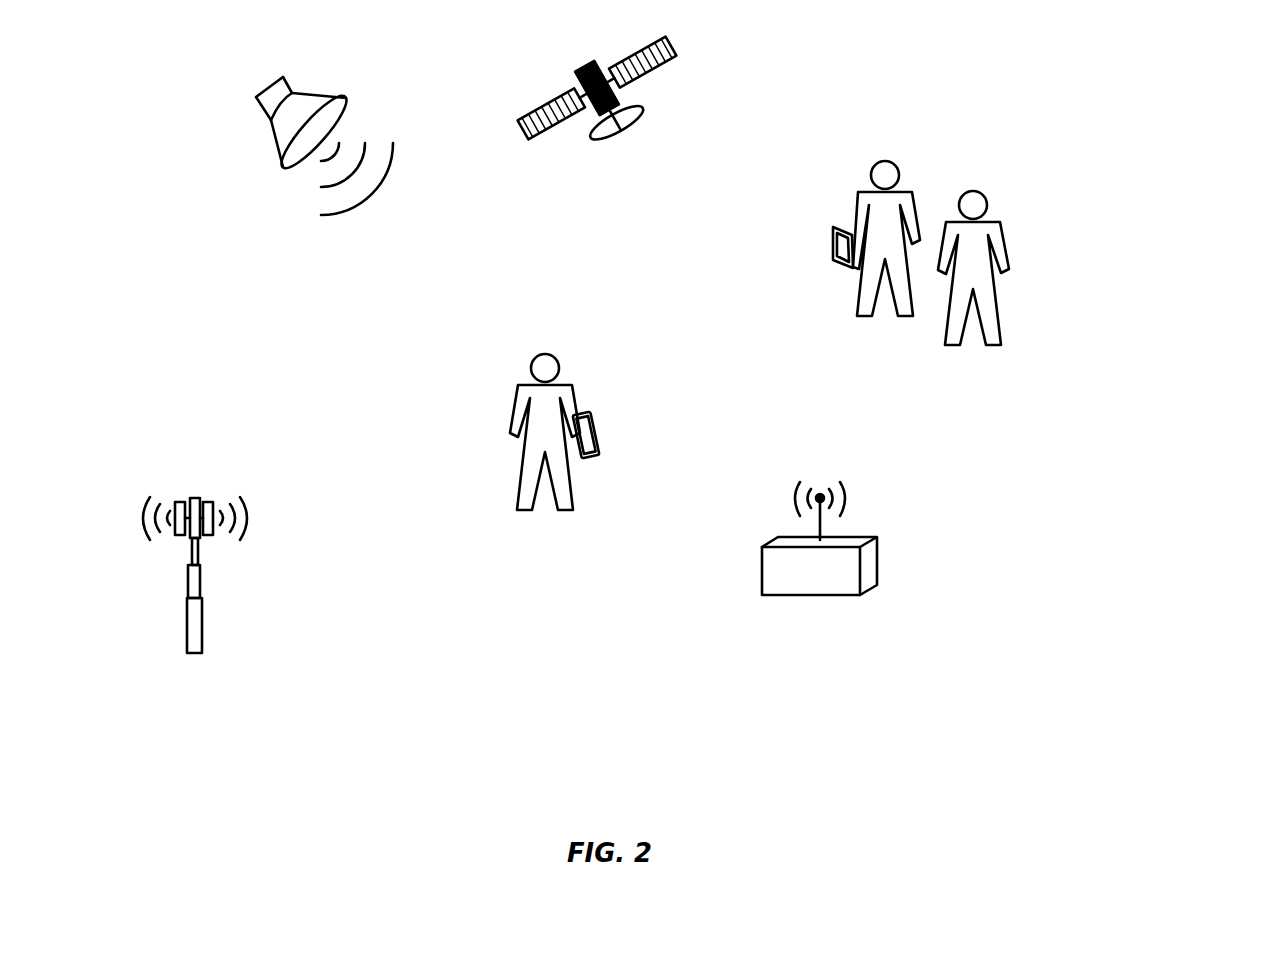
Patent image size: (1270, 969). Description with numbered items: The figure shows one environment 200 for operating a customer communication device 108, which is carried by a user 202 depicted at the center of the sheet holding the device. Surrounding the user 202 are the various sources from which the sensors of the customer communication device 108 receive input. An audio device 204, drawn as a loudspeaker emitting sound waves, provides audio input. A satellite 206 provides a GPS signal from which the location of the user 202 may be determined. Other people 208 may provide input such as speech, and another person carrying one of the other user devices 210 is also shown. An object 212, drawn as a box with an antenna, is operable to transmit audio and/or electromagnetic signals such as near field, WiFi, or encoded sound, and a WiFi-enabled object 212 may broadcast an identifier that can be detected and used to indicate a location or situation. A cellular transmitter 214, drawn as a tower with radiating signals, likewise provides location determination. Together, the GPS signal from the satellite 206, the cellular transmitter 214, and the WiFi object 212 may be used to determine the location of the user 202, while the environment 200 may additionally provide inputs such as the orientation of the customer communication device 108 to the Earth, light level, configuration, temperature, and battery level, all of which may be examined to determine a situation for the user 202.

The environment 200 is at (1178, 123).
The user 202 is at (562, 368).
The customer communication device 108 is at (595, 427).
The audio devices 204 is at (327, 94).
The satellite 206 is at (650, 72).
The other people 208 is at (1001, 222).
The other user devices 210 is at (836, 229).
The objects operable to transmit audio and/or electromagnetic signals 212 is at (866, 560).
The cellular transmitters 214 is at (208, 500).